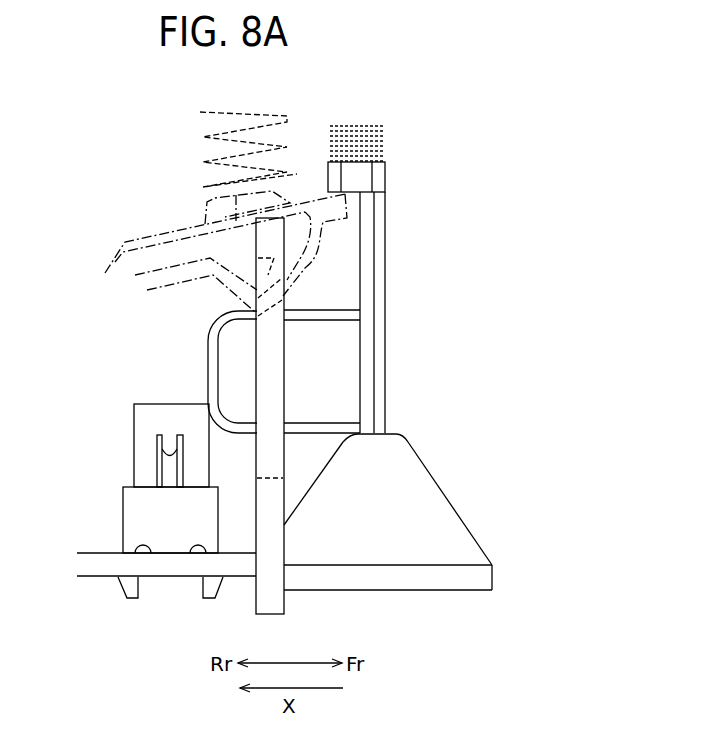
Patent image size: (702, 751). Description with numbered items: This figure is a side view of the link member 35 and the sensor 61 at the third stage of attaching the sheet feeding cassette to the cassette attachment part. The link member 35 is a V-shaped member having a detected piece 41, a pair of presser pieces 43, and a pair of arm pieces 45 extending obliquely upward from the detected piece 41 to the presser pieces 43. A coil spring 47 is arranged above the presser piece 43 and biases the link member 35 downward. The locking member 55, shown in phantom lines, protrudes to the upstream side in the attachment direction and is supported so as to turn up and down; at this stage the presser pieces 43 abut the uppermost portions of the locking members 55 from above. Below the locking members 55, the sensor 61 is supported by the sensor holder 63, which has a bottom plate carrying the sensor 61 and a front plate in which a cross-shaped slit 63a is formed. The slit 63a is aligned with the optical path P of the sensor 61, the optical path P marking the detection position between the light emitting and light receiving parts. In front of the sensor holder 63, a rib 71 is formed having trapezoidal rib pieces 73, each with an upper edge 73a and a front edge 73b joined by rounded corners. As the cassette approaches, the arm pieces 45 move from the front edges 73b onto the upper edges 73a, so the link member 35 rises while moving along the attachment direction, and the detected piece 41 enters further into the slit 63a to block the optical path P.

The link member 35 is at (405, 256).
The detected piece 41 is at (322, 352).
The presser piece 43 is at (372, 185).
The arm piece 45 is at (372, 322).
The coil spring 47 is at (385, 143).
The locking member 55 is at (133, 237).
The sensor 61 is at (130, 437).
The sensor holder 63 is at (262, 523).
The slit 63a is at (257, 308).
The rib 71 is at (450, 488).
The rib piece 73 is at (412, 545).
The upper edge 73a is at (403, 425).
The front edge 73b is at (465, 522).
The optical path P is at (158, 452).